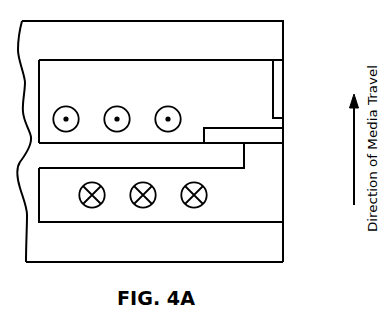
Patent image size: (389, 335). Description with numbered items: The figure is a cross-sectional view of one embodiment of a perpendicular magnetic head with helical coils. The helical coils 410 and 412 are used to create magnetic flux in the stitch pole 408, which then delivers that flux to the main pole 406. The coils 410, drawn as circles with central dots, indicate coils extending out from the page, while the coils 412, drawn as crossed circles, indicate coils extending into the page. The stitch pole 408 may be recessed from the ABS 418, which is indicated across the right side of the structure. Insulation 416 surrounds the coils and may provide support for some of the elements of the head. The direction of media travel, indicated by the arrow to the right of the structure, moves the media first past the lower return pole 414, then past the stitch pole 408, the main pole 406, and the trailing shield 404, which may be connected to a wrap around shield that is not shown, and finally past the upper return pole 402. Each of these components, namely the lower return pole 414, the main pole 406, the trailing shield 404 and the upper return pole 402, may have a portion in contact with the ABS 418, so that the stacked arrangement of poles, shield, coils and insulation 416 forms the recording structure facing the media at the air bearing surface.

The upper return pole 402 is at (214, 50).
The trailing shield 404 is at (284, 93).
The main pole 406 is at (284, 131).
The stitch pole 408 is at (176, 166).
The helical coils 410 is at (69, 107).
The helical coils 412 is at (80, 200).
The lower return pole 414 is at (176, 252).
The insulation 416 is at (246, 100).
The ABS 418 is at (284, 33).